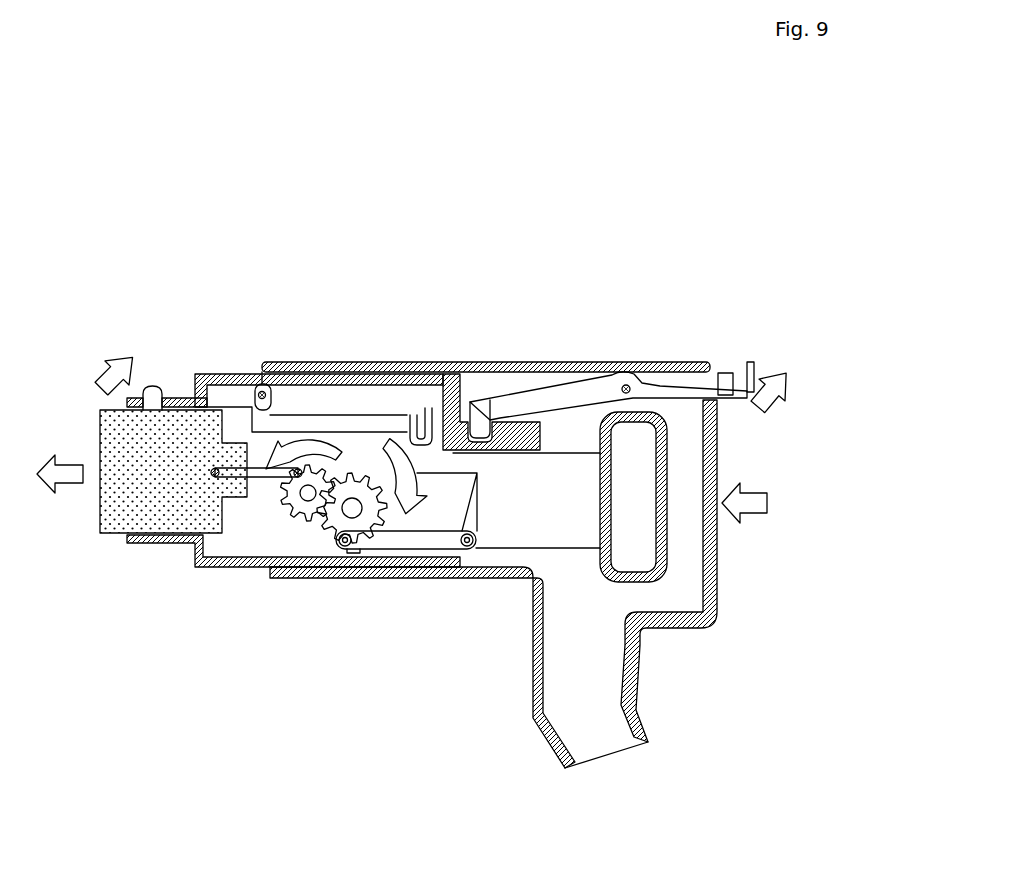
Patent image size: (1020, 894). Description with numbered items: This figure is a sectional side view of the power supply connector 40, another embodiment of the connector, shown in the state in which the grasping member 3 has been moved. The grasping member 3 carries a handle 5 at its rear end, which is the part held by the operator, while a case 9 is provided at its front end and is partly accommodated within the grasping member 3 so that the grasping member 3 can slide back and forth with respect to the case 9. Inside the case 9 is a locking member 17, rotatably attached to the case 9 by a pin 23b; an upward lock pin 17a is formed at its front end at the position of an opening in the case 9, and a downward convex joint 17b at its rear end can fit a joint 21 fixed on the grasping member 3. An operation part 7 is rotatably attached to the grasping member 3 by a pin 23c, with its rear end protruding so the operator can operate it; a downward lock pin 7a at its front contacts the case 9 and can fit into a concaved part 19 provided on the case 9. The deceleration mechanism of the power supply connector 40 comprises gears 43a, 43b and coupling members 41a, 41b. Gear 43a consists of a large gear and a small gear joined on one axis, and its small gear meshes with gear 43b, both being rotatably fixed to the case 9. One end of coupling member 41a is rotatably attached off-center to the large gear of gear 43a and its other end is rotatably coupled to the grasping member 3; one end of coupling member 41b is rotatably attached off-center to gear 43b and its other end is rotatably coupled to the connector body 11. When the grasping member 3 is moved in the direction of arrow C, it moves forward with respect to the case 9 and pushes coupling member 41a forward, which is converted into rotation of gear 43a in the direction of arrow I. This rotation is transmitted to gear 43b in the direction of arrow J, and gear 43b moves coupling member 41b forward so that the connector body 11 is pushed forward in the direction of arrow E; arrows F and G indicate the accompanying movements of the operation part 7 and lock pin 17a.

The power supply connector 40 is at (583, 190).
The grasping member 3 is at (227, 560).
The handle 5 is at (657, 490).
The operation part 7 is at (722, 372).
The lock pin 7a is at (485, 405).
The case 9 is at (255, 372).
The connector body 11 is at (180, 515).
The locking member 17 is at (224, 372).
The lock pin 17a is at (152, 388).
The joint 17b is at (424, 436).
The concaved part 19 is at (481, 405).
The joint 21 is at (393, 447).
The pin 23b is at (247, 372).
The pin 23c is at (603, 363).
The coupling member 41a is at (403, 540).
The coupling member 41b is at (290, 480).
The gear 43a is at (352, 512).
The gear 43b is at (308, 497).
The arrow I is at (458, 548).
The arrow J is at (322, 447).
The arrow E is at (60, 466).
The arrow G is at (112, 372).
The arrow C is at (755, 503).
The arrow F is at (774, 390).